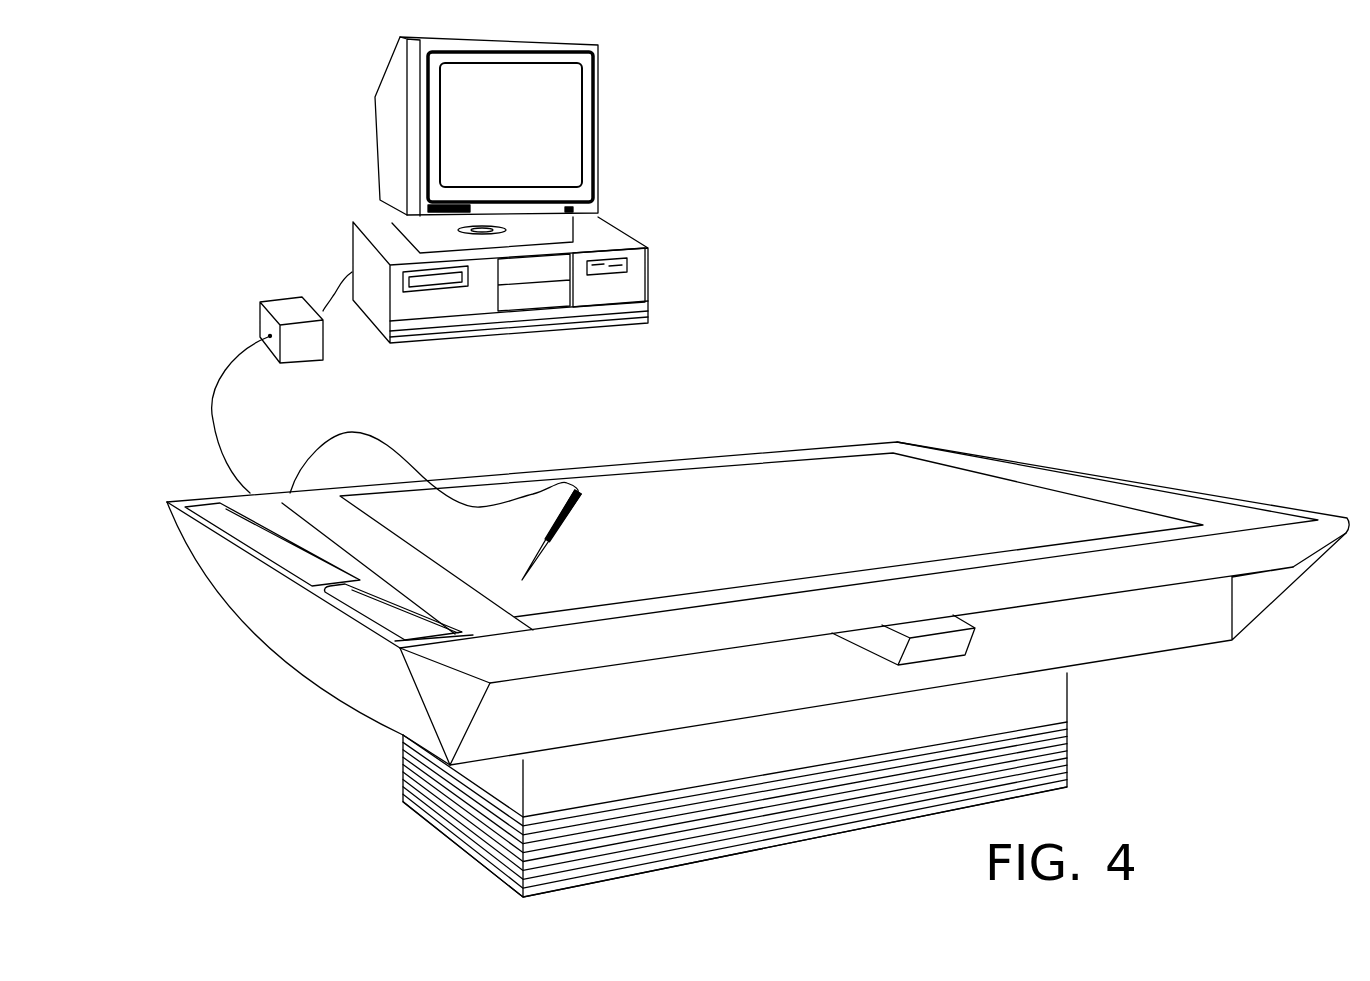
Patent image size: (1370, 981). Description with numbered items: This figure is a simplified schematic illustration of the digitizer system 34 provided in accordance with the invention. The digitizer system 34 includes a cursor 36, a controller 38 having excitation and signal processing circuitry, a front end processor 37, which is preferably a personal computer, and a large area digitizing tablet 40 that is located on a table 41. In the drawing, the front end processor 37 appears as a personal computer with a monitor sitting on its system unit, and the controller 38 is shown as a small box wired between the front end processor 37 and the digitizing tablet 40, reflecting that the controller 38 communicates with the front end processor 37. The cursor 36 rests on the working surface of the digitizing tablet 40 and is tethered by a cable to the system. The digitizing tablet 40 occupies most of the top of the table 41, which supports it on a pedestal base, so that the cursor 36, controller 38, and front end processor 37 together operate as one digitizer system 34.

The digitizer system 34 is at (805, 313).
The cursor 36 is at (557, 535).
The front end processor 37 is at (619, 219).
The controller 38 is at (287, 312).
The digitizing tablet 40 is at (838, 497).
The table 41 is at (1107, 632).